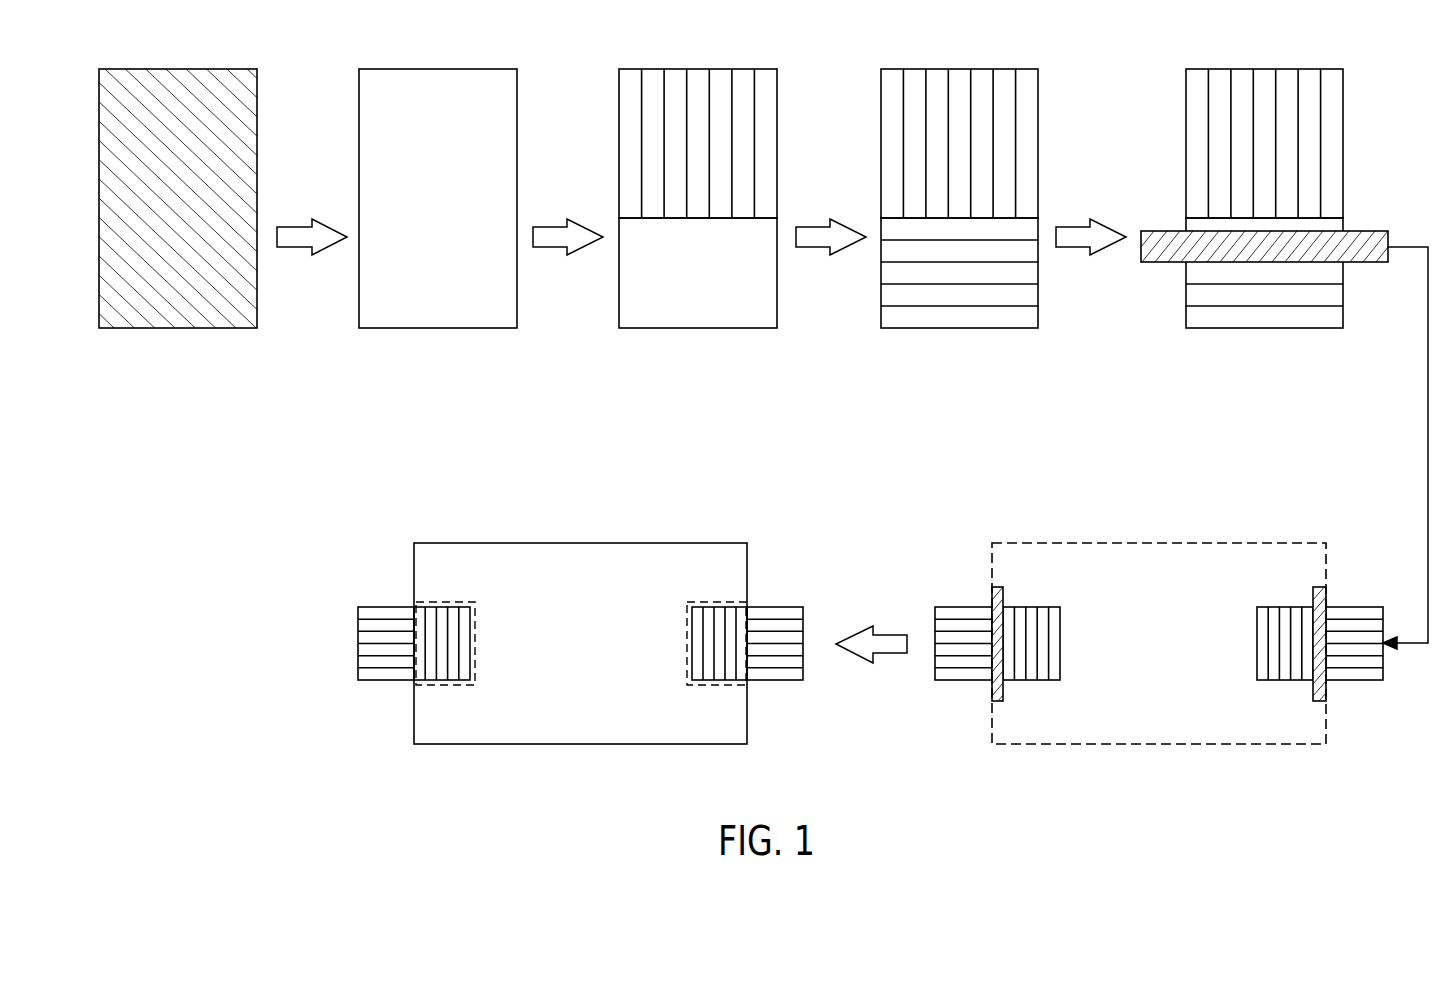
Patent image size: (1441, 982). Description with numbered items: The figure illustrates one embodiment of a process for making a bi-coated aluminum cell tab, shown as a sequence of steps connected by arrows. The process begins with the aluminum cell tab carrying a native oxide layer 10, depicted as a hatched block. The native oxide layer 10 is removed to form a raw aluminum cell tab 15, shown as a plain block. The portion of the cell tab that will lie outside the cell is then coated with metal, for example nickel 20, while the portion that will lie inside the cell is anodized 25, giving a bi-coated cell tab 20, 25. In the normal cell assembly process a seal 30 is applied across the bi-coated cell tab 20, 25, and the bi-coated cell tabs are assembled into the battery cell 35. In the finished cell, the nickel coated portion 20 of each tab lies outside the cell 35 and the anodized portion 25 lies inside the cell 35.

The native oxide layer 10 is at (180, 328).
The raw aluminum cell tab 15 is at (443, 328).
The nickel coated portion 20 is at (627, 144).
The anodized portion 25 is at (887, 293).
The seal 30 is at (1375, 237).
The battery cell 35 is at (585, 543).